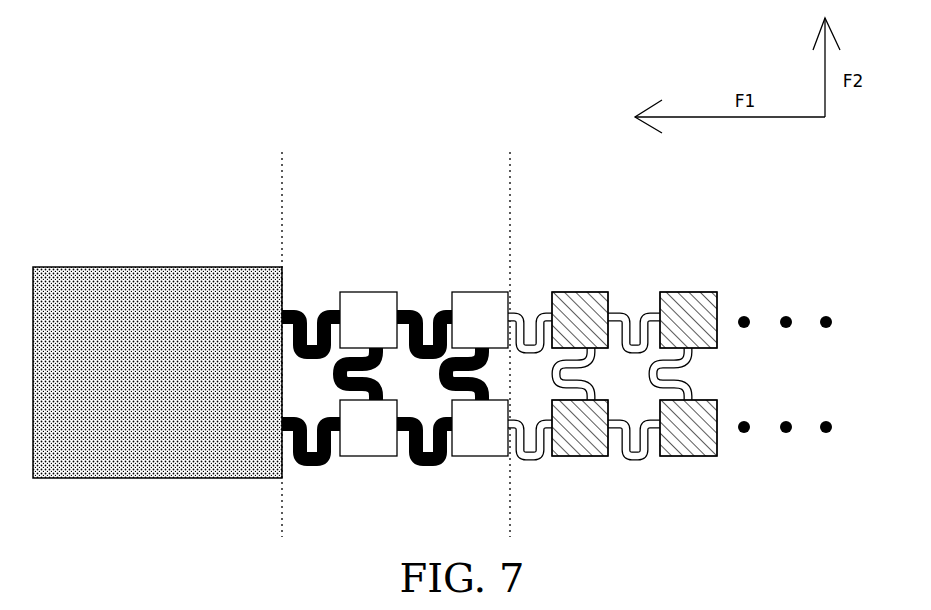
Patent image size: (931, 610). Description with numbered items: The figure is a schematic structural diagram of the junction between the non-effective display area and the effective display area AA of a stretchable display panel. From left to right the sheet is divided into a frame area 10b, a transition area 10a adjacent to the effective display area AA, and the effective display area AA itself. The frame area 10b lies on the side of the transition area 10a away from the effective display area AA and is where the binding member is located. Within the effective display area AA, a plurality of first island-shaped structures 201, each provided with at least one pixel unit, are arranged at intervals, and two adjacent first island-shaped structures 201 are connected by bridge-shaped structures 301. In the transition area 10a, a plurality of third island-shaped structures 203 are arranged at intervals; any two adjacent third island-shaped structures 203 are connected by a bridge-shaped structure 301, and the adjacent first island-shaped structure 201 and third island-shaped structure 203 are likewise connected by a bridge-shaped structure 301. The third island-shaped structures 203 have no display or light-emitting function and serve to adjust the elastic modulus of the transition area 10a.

The first island-shaped structure 201 is at (578, 440).
The third island-shaped structure 203 is at (372, 430).
The bridge-shaped structure 301 is at (654, 447).
The transition area 10a is at (510, 200).
The frame area 10b is at (282, 200).
The effective display area AA is at (827, 200).